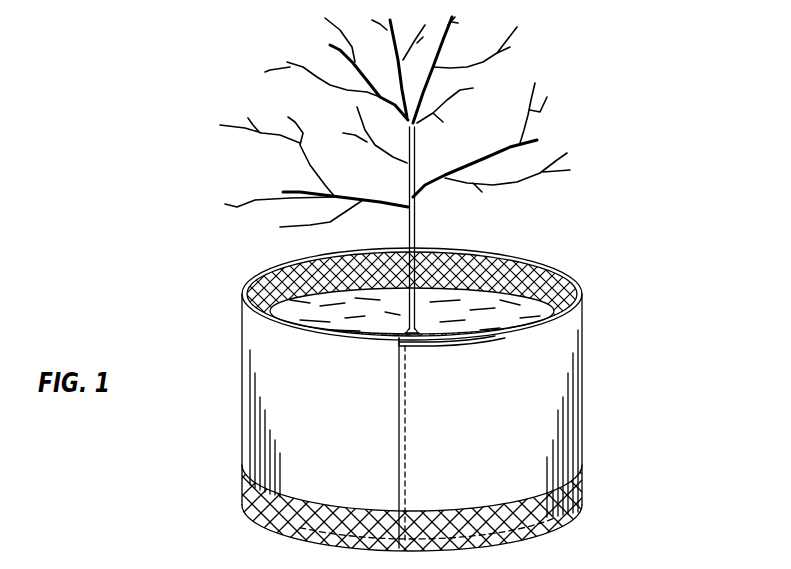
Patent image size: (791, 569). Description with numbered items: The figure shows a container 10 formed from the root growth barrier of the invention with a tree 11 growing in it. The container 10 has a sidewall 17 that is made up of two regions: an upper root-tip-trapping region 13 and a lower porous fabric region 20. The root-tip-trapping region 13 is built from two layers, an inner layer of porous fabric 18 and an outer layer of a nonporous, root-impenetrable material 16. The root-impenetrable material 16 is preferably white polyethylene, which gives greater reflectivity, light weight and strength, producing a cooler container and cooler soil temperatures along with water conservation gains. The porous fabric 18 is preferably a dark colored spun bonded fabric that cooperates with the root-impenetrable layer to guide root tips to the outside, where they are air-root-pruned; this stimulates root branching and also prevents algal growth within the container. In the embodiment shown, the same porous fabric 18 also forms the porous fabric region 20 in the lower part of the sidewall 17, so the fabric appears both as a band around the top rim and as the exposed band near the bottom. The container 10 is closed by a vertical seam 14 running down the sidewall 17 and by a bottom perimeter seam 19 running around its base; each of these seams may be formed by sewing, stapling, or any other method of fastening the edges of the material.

The container 10 is at (620, 280).
The tree 11 is at (482, 157).
The root-tip-trapping region 13 is at (231, 293).
The vertical seam 14 is at (398, 427).
The nonporous, root-impenetrable material 16 is at (584, 364).
The sidewall 17 is at (640, 412).
The porous fabric 18 is at (494, 258).
The bottom perimeter seam 19 is at (580, 511).
The porous fabric region 20 is at (233, 462).